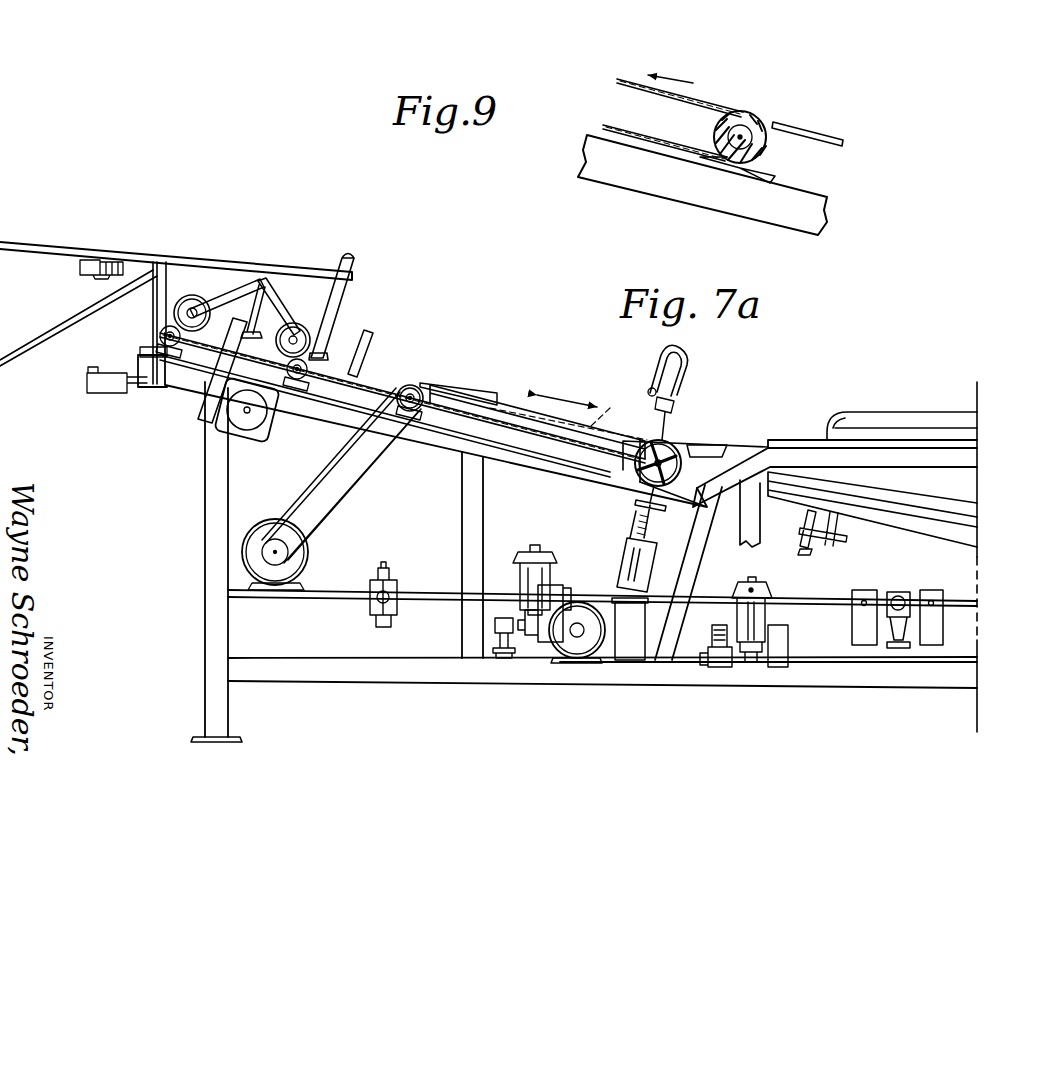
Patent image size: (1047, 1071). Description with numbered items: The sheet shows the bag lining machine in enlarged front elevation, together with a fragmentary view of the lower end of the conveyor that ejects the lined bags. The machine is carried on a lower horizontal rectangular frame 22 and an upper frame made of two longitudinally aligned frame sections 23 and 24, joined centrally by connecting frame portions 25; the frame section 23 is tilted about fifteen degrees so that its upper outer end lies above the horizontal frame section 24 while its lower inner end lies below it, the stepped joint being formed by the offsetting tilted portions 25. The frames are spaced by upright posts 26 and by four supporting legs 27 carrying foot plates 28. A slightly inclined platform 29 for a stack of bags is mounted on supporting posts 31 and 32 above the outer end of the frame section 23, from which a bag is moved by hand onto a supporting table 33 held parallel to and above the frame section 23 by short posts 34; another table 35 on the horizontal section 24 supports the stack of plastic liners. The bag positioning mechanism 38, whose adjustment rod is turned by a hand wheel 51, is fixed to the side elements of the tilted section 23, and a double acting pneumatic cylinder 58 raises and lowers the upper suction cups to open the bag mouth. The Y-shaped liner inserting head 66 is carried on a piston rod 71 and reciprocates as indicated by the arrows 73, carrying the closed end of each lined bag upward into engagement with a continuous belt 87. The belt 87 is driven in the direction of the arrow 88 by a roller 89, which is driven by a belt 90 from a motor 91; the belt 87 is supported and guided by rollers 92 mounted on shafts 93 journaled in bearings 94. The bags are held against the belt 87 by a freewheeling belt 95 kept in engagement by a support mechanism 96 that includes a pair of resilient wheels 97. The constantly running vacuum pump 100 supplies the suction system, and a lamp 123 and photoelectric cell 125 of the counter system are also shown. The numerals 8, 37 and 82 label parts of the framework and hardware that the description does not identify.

In FIG. 7A, the diagonal brace 8 is at (37, 336).
In FIG. 7A, the lower rectangular frame 22 is at (373, 675).
In FIG. 9, the tilted upper frame section 23 is at (720, 207).
In FIG. 7A, the tilted upper frame section 23 is at (553, 473).
In FIG. 7A, the horizontal upper frame section 24 is at (930, 465).
In FIG. 7A, the connecting frame portions 25 is at (737, 513).
In FIG. 7A, the upright posts 26 is at (462, 528).
In FIG. 7A, the supporting legs 27 is at (205, 630).
In FIG. 7A, the foot plates 28 is at (197, 737).
In FIG. 7A, the inclined platform 29 is at (13, 242).
In FIG. 7A, the supporting post 31 is at (153, 305).
In FIG. 7A, the supporting post 32 is at (338, 297).
In FIG. 9, the supporting table 33 is at (823, 130).
In FIG. 7A, the supporting table 33 is at (503, 413).
In FIG. 7A, the short posts 34 is at (610, 460).
In FIG. 7A, the liner table 35 is at (810, 445).
In FIG. 7A, the receiving table 37 is at (907, 430).
In FIG. 7A, the bag positioning mechanism 38 is at (677, 405).
In FIG. 7A, the hand wheel 51 is at (673, 437).
In FIG. 7A, the double acting pneumatic cylinder 58 is at (617, 555).
In FIG. 7A, the liner gripping and inserting head 66 is at (461, 382).
In FIG. 7A, the piston rod 71 is at (603, 417).
In FIG. 7A, the arrows 73 is at (567, 397).
In FIG. 7A, the bracket 82 is at (800, 547).
In FIG. 9, the continuous belt 87 is at (722, 103).
In FIG. 7A, the continuous belt 87 is at (325, 371).
In FIG. 9, the arrow 88 is at (685, 83).
In FIG. 9, the roller 89 is at (755, 125).
In FIG. 7A, the roller 89 is at (413, 386).
In FIG. 7A, the drive belt 90 is at (341, 503).
In FIG. 7A, the motor 91 is at (250, 572).
In FIG. 7A, the rollers 92 is at (176, 342).
In FIG. 9, the shafts 93 is at (753, 139).
In FIG. 7A, the shafts 93 is at (160, 336).
In FIG. 9, the bearings 94 is at (780, 175).
In FIG. 7A, the bearings 94 is at (150, 348).
In FIG. 7A, the freewheeling belt 95 is at (207, 300).
In FIG. 7A, the support mechanism 96 is at (207, 381).
In FIG. 7A, the wheels 97 is at (190, 307).
In FIG. 7A, the vacuum pump 100 is at (578, 600).
In FIG. 7A, the lamp 123 is at (100, 387).
In FIG. 7A, the photoelectric cell 125 is at (82, 267).